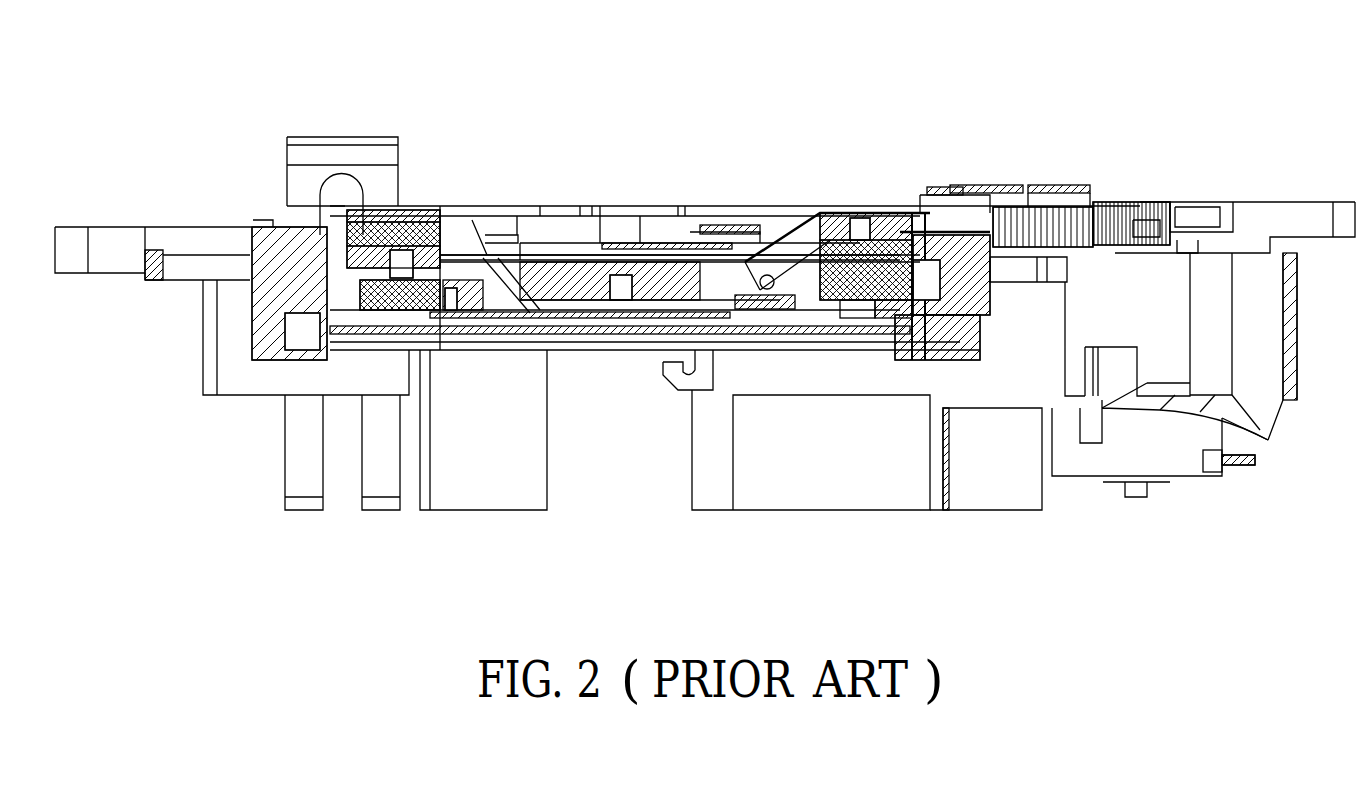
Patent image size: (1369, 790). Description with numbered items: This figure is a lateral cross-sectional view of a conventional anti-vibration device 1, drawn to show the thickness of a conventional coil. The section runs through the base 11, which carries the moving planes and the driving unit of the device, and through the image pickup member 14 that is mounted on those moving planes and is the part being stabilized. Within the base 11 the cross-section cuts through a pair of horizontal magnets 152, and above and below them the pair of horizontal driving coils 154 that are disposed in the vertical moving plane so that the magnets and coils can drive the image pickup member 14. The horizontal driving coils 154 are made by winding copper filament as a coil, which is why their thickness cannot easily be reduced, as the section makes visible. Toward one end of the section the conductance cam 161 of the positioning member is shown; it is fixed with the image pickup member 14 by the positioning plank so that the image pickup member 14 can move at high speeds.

The anti-vibration device 1 is at (222, 122).
The base 11 is at (252, 315).
The image pickup member 14 is at (650, 334).
The horizontal magnets 152 is at (440, 350).
The horizontal driving coils 154 is at (430, 210).
The conductance cam 161 is at (1115, 198).